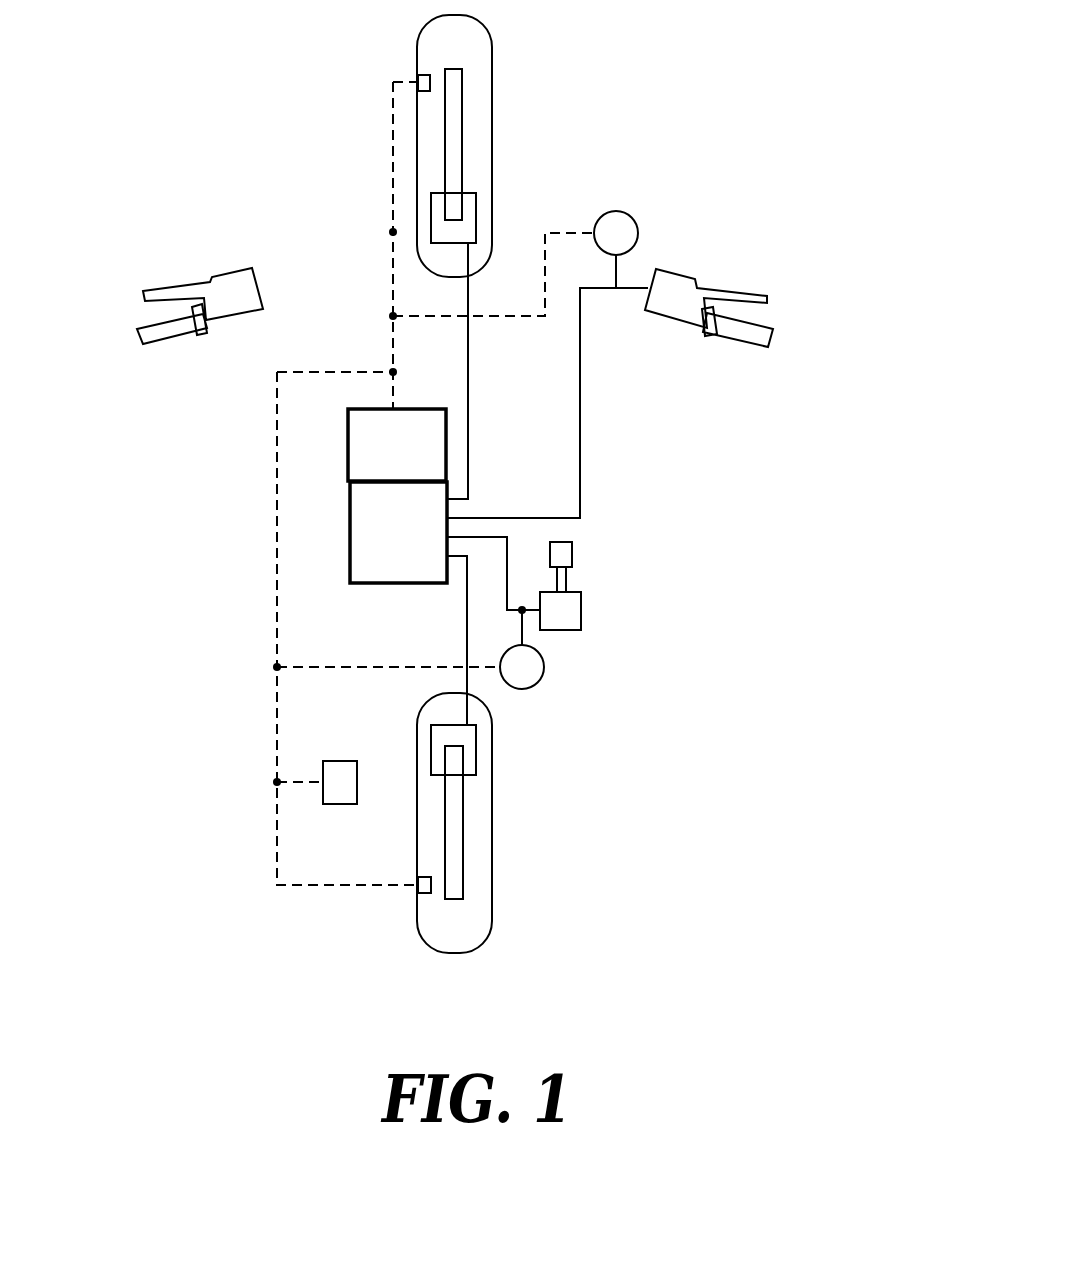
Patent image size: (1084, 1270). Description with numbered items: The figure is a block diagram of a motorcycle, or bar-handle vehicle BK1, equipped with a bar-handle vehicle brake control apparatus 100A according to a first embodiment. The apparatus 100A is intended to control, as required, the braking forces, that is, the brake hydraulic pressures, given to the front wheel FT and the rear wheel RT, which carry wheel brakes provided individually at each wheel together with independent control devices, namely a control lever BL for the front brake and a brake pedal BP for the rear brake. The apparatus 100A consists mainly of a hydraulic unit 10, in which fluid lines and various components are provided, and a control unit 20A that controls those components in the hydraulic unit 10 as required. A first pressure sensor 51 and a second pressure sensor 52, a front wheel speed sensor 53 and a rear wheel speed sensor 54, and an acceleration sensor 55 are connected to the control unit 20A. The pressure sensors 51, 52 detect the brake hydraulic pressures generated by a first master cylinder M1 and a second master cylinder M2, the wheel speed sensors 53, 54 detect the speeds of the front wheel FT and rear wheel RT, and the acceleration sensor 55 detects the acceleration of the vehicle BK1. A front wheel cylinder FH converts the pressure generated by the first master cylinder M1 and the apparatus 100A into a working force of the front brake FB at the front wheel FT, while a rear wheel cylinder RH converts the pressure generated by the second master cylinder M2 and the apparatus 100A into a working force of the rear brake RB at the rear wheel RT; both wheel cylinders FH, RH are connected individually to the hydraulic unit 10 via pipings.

The bar-handle vehicle brake control apparatus 100A is at (327, 490).
The hydraulic unit 10 is at (350, 565).
The control unit 20A is at (410, 409).
The first pressure sensor 51 is at (616, 211).
The second pressure sensor 52 is at (544, 667).
The front wheel speed sensor 53 is at (418, 80).
The rear wheel speed sensor 54 is at (418, 893).
The acceleration sensor 55 is at (340, 761).
The vehicle BK1 is at (617, 70).
The front wheel FT is at (492, 55).
The front brake FB is at (460, 91).
The front wheel cylinder FH is at (476, 214).
The rear wheel RT is at (492, 913).
The rear brake RB is at (458, 825).
The rear wheel cylinder RH is at (476, 757).
The first master cylinder M1 is at (672, 280).
The second master cylinder M2 is at (581, 612).
The control lever BL is at (740, 294).
The brake pedal BP is at (572, 553).